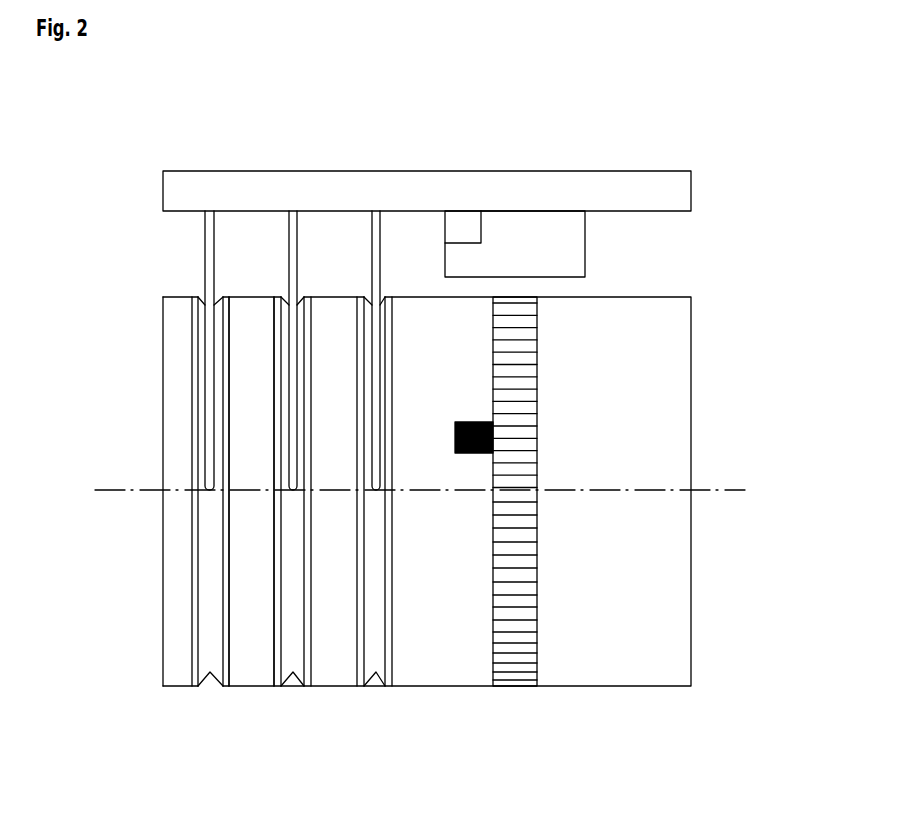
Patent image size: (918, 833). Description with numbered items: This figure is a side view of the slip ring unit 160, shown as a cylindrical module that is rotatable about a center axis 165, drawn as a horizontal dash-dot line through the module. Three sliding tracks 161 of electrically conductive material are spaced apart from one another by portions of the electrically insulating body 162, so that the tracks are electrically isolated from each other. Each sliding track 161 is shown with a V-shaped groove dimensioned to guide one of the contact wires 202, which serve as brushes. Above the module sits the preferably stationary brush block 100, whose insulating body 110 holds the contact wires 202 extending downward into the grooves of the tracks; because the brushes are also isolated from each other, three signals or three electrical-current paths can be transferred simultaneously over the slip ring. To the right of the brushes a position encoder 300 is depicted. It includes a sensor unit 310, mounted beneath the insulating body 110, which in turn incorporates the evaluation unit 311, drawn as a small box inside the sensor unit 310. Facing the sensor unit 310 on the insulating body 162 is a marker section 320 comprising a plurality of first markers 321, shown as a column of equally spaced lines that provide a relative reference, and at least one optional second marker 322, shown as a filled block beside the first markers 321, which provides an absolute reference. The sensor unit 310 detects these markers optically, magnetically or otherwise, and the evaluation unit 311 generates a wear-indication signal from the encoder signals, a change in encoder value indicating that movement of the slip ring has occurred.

The brush block 100 is at (254, 155).
The insulating body 110 is at (532, 192).
The contact wire 202 is at (205, 264).
The position encoder 300 is at (611, 281).
The sensor unit 310 is at (601, 243).
The evaluation unit 311 is at (463, 224).
The marker section 320 is at (541, 373).
The first markers 321 is at (538, 422).
The second marker 322 is at (463, 422).
The slip ring unit 160 is at (563, 691).
The sliding track 161 is at (210, 673).
The insulating body 162 is at (253, 672).
The center axis 165 is at (738, 490).